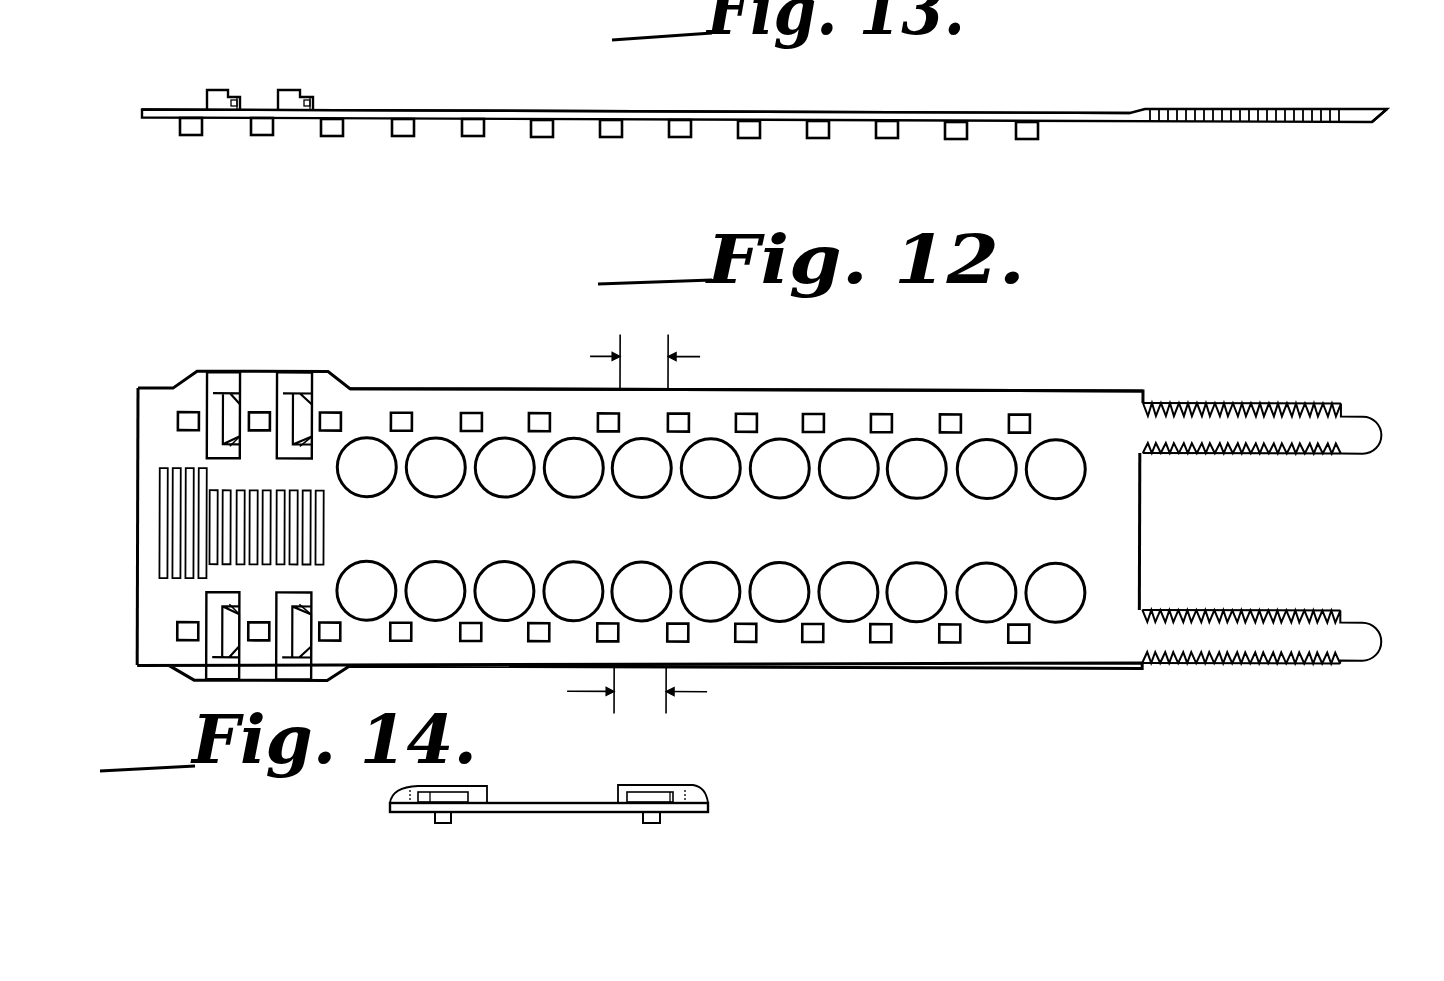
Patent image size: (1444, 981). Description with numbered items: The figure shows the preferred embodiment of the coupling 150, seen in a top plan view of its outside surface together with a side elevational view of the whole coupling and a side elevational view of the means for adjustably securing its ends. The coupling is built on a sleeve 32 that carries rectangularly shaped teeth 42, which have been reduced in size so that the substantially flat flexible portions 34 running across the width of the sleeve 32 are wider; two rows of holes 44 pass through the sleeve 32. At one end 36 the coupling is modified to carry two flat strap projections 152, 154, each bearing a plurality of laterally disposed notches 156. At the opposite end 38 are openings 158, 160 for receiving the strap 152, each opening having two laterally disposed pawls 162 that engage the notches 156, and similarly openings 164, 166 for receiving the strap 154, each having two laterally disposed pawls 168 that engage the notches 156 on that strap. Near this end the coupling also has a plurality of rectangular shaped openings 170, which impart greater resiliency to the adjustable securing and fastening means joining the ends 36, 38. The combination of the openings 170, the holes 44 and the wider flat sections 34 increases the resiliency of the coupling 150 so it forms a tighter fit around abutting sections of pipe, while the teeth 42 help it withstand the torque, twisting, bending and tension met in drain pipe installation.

In FIG. 13, the sleeve 32 is at (797, 112).
In FIG. 12, the sleeve 32 is at (705, 545).
In FIG. 14, the sleeve 32 is at (552, 815).
In FIG. 12, the substantially flat flexible portions 34 is at (637, 523).
In FIG. 12, the end 36 is at (1146, 395).
In FIG. 12, the end 38 is at (138, 388).
In FIG. 13, the teeth 42 is at (190, 137).
In FIG. 12, the teeth 42 is at (808, 641).
In FIG. 14, the teeth 42 is at (440, 823).
In FIG. 12, the holes 44 is at (579, 450).
In FIG. 13, the coupling 150 is at (965, 103).
In FIG. 12, the coupling 150 is at (946, 388).
In FIG. 13, the flat strap projection 152 is at (1374, 123).
In FIG. 12, the flat strap projection 152 is at (1376, 655).
In FIG. 12, the flat strap projection 154 is at (1376, 452).
In FIG. 13, the notches 156 is at (1262, 111).
In FIG. 12, the notches 156 is at (1263, 450).
In FIG. 13, the opening 158 is at (233, 78).
In FIG. 12, the opening 158 is at (222, 681).
In FIG. 14, the opening 158 is at (400, 782).
In FIG. 13, the opening 160 is at (290, 98).
In FIG. 12, the opening 160 is at (286, 668).
In FIG. 13, the pawls 162 is at (310, 109).
In FIG. 12, the pawls 162 is at (208, 595).
In FIG. 14, the pawls 162 is at (430, 795).
In FIG. 12, the opening 164 is at (217, 398).
In FIG. 14, the opening 164 is at (633, 790).
In FIG. 12, the opening 166 is at (275, 393).
In FIG. 12, the pawls 168 is at (227, 443).
In FIG. 14, the pawls 168 is at (643, 798).
In FIG. 12, the rectangular shaped openings 170 is at (278, 525).